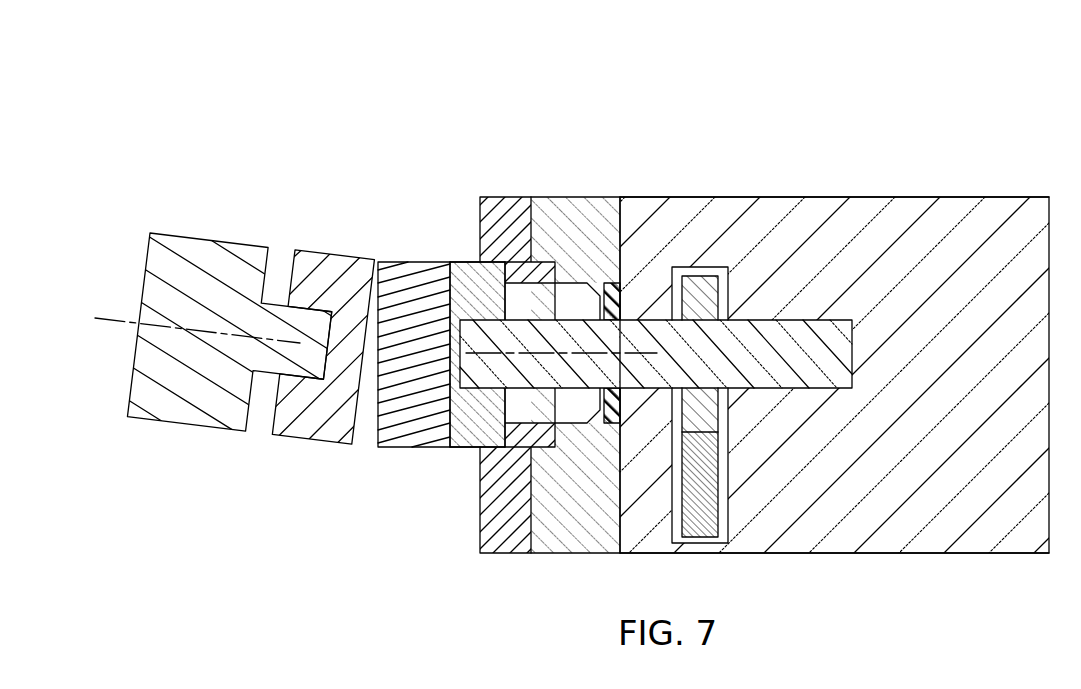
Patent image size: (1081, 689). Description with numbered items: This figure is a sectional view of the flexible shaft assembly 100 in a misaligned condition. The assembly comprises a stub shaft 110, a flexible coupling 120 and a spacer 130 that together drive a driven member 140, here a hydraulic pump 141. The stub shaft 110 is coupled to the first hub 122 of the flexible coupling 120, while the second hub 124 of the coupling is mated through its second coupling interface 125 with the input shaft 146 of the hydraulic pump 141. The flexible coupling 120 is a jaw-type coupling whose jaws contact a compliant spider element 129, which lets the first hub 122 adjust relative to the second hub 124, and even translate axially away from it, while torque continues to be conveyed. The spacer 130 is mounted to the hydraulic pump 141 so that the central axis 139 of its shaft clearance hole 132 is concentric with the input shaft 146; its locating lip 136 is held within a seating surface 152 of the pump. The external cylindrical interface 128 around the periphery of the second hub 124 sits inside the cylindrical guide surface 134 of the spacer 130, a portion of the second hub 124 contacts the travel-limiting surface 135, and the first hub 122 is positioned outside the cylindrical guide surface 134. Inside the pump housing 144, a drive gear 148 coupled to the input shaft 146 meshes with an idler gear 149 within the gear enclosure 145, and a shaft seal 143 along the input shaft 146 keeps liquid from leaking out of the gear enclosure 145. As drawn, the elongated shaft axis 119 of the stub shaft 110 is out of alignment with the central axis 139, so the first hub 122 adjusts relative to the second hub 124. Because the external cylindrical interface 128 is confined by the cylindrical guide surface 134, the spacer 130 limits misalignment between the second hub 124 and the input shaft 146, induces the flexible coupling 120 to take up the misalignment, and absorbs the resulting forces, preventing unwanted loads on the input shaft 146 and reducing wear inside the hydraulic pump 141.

The flexible shaft assembly 100 is at (567, 325).
The stub shaft 110 is at (227, 383).
The elongated shaft axis 119 is at (192, 308).
The flexible coupling 120 is at (295, 342).
The first hub 122 is at (315, 395).
The second hub 124 is at (441, 383).
The second coupling interface 125 is at (471, 338).
The external cylindrical interface 128 is at (540, 243).
The compliant spider element 129 is at (414, 338).
The spacer 130 is at (528, 402).
The shaft clearance hole 132 is at (540, 470).
The cylindrical guide surface 134 is at (479, 419).
The travel-limiting surface 135 is at (467, 237).
The locating lip 136 is at (535, 359).
The central axis 139 is at (579, 315).
The driven member 140 is at (834, 355).
The hydraulic pump 141 is at (834, 151).
The shaft seal 143 is at (596, 331).
The pump housing 144 is at (834, 579).
The gear enclosure 145 is at (714, 427).
The input shaft 146 is at (687, 354).
The drive gear 148 is at (731, 298).
The idler gear 149 is at (727, 462).
The seating surface 152 is at (532, 418).